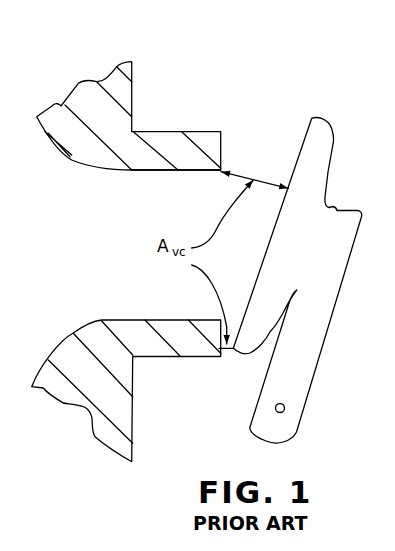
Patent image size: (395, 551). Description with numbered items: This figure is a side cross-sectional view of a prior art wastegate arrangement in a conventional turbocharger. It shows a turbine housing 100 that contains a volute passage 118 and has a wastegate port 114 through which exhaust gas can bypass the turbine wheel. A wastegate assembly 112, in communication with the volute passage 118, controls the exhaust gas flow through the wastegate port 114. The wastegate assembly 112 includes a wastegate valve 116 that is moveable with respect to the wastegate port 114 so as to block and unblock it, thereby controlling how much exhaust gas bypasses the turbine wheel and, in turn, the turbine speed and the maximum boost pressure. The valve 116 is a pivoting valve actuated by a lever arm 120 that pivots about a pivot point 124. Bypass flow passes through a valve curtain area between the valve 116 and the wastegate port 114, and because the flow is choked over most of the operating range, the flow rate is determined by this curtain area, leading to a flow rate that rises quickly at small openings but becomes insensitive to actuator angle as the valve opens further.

The turbine housing 100 is at (107, 120).
The wastegate port 114 is at (183, 180).
The volute passage 118 is at (84, 255).
The wastegate valve 116 is at (290, 237).
The wastegate assembly 112 is at (303, 328).
The lever arm 120 is at (297, 378).
The pivot point 124 is at (285, 410).